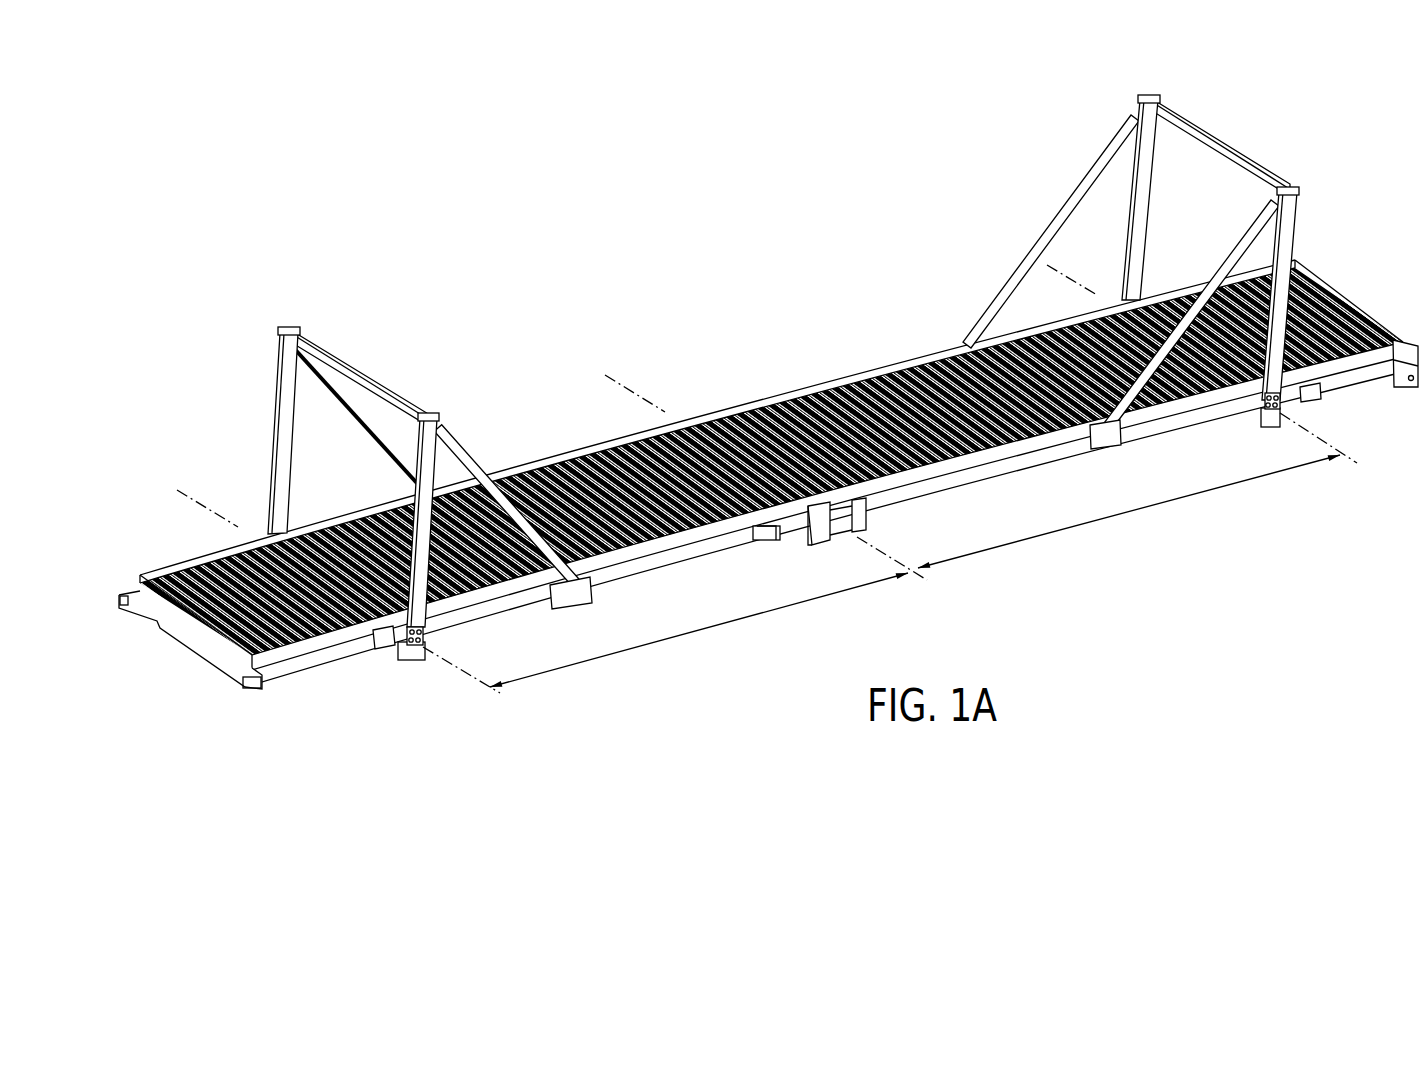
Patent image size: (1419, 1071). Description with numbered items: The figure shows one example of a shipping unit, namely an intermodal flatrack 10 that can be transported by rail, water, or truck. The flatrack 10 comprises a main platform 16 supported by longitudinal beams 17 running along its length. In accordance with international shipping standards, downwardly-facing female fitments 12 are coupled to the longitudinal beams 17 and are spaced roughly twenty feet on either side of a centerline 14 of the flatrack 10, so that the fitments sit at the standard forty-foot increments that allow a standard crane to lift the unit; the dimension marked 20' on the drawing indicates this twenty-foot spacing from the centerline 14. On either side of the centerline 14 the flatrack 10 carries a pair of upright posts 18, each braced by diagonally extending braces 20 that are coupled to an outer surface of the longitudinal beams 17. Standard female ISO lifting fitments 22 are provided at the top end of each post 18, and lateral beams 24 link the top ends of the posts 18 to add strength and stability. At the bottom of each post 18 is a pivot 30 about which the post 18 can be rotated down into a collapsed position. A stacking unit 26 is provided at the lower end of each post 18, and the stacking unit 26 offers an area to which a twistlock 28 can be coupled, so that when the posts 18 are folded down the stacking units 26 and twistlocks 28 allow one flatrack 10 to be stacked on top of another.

The intermodal flatrack 10 is at (735, 185).
The downwardly-facing female fitments 12 is at (415, 660).
The centerline 14 is at (913, 577).
The main platform 16 is at (587, 440).
The longitudinal beams 17 is at (1003, 468).
The upright posts 18 is at (283, 448).
The diagonally extending braces 20 is at (785, 362).
The deck section length 20' is at (915, 571).
The female ISO lifting fitments 22 is at (290, 332).
The lateral beams 24 is at (378, 382).
The stacking unit 26 is at (399, 650).
The twistlock 28 is at (383, 640).
The pivot 30 is at (425, 648).